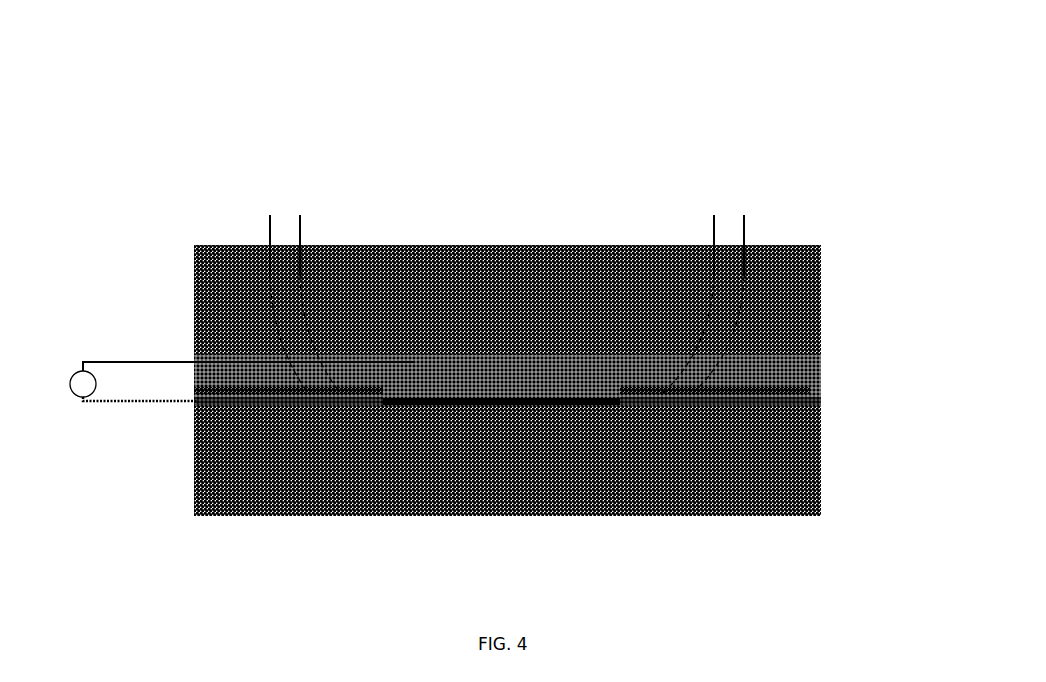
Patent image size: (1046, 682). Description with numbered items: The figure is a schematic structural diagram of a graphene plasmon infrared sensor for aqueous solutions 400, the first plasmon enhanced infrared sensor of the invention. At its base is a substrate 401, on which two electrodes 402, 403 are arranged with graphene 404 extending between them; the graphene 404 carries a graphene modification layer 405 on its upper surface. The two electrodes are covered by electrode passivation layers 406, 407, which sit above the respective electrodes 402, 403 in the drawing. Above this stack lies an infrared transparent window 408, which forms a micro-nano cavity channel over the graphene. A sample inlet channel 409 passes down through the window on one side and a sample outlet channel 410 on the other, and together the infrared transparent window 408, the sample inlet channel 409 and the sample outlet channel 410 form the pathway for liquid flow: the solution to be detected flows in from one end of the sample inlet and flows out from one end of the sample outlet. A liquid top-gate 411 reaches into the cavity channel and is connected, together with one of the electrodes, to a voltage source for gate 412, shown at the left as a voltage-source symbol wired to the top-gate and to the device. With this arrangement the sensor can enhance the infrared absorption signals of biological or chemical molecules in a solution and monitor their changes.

The graphene plasmon infrared sensor for aqueous solutions 400 is at (400, 160).
The substrate 401 is at (706, 455).
The electrode 402 is at (273, 392).
The electrode 403 is at (797, 392).
The graphene 404 is at (488, 388).
The graphene modification layer 405 is at (550, 383).
The electrode passivation layer 406 is at (253, 383).
The electrode passivation layer 407 is at (797, 378).
The infrared transparent window 408 is at (217, 315).
The sample inlet channel 409 is at (253, 222).
The sample outlet channel 410 is at (742, 218).
The liquid top-gate 411 is at (403, 352).
The voltage source for gate 412 is at (103, 412).